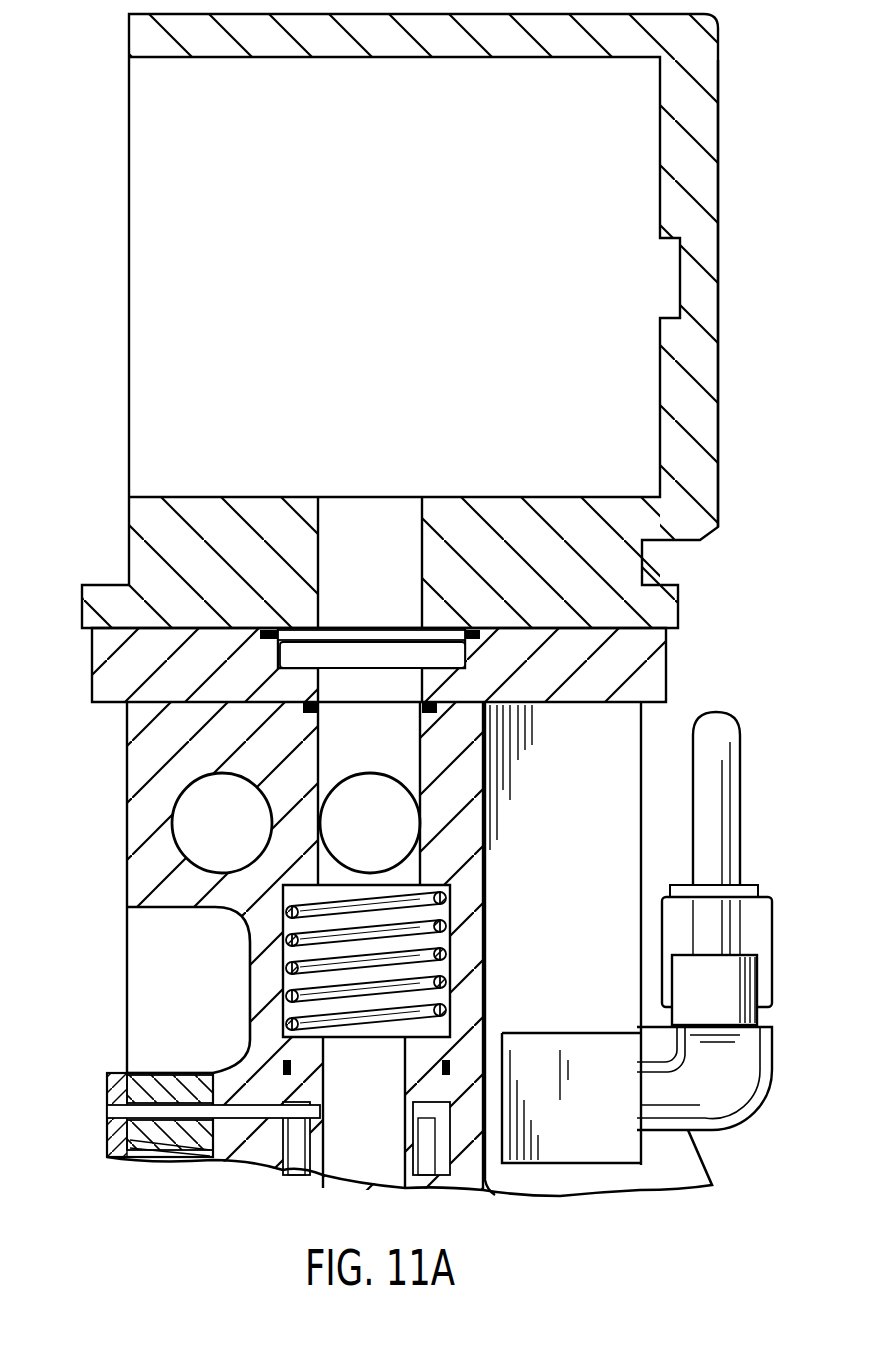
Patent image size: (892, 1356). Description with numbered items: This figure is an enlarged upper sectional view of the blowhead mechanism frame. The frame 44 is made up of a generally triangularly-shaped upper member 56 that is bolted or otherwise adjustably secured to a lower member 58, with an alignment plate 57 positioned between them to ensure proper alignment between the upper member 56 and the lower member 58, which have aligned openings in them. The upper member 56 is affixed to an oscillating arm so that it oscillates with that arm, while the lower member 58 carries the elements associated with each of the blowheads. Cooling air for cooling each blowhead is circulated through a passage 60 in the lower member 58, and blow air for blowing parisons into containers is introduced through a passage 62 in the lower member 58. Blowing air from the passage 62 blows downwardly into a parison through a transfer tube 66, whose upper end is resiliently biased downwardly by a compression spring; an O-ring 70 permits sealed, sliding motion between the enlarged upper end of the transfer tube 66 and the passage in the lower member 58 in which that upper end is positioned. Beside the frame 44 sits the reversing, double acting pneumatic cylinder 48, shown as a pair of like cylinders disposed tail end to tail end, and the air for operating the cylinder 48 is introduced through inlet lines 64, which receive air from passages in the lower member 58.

The frame 44 is at (720, 477).
The upper member 56 is at (720, 206).
The alignment plate 57 is at (668, 665).
The lower member 58 is at (124, 763).
The passage 60 is at (176, 836).
The passage 62 is at (251, 936).
The inlet lines 64 is at (742, 782).
The transfer tube 66 is at (332, 1156).
The O-ring 70 is at (277, 1055).
The pneumatic cylinder 48 is at (643, 787).